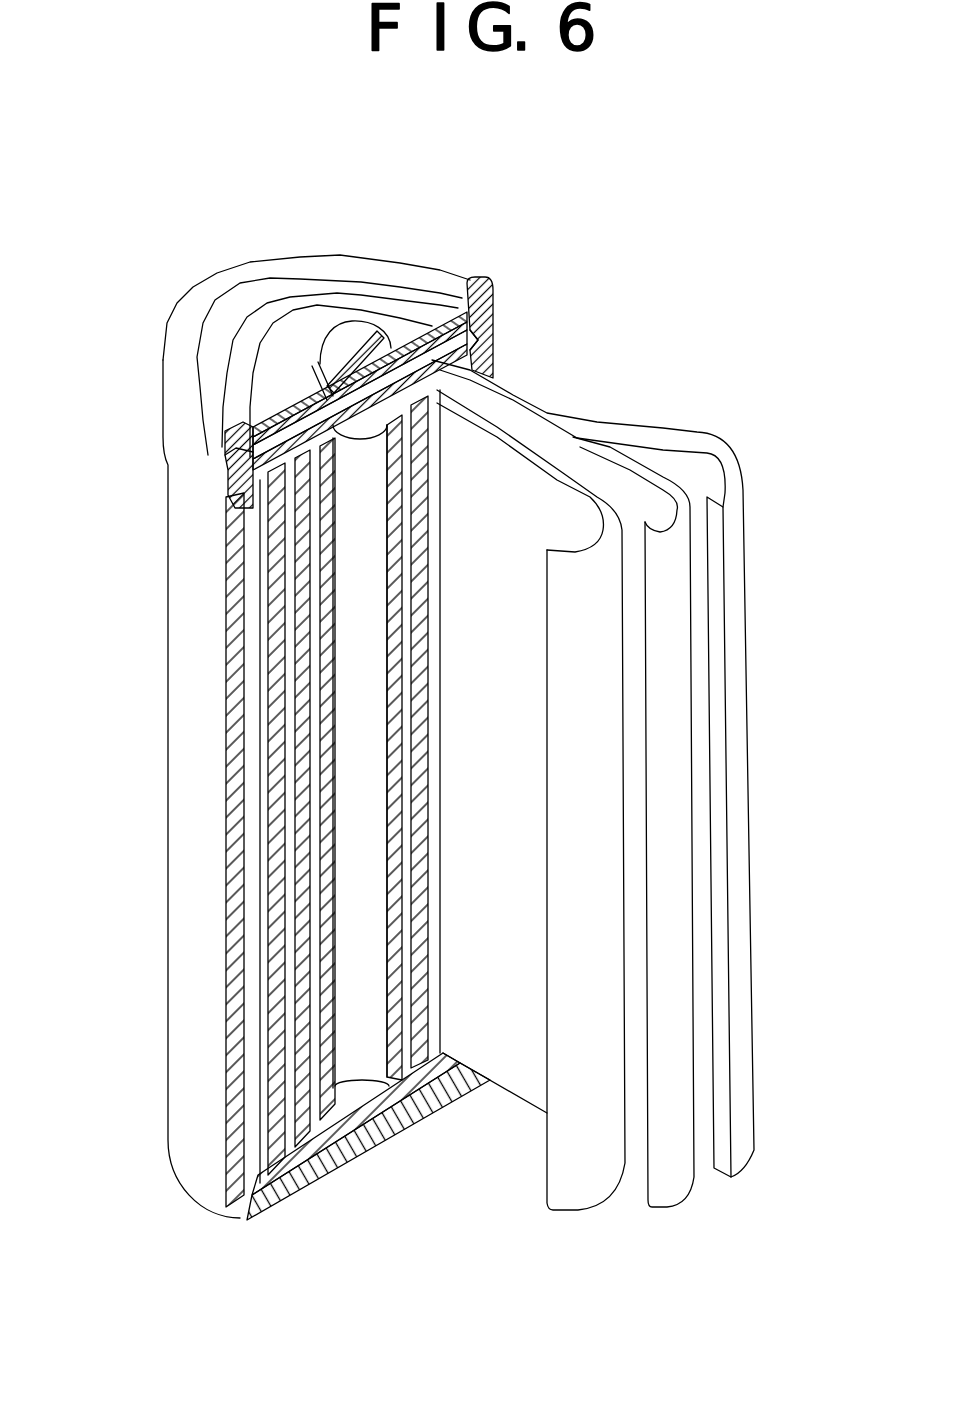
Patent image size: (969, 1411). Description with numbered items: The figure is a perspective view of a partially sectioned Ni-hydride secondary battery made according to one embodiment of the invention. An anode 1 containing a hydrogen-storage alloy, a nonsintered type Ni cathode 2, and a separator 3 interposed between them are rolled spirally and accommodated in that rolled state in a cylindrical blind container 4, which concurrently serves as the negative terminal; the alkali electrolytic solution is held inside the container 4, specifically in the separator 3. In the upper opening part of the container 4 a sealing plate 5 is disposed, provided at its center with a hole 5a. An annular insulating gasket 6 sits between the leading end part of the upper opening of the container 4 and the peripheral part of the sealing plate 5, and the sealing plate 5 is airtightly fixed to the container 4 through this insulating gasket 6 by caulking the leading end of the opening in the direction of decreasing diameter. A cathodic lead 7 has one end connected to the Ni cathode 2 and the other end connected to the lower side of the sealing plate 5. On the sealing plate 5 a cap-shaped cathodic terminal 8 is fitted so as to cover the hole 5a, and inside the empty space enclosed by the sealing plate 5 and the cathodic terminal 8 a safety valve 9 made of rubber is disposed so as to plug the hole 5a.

The anode 1 is at (757, 1100).
The Ni cathode 2 is at (600, 1213).
The separator 3 is at (678, 1203).
The cylindrical blind container 4 is at (240, 1208).
The sealing plate 5 is at (440, 320).
The hole 5a is at (494, 356).
The annular insulating gasket 6 is at (228, 468).
The cathodic lead 7 is at (238, 436).
The cathodic terminal 8 is at (360, 330).
The safety valve 9 is at (308, 370).